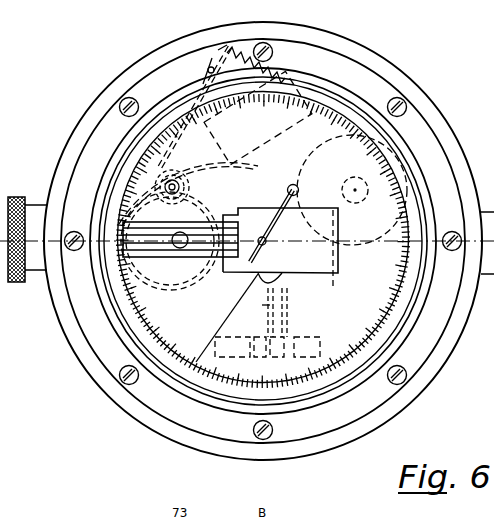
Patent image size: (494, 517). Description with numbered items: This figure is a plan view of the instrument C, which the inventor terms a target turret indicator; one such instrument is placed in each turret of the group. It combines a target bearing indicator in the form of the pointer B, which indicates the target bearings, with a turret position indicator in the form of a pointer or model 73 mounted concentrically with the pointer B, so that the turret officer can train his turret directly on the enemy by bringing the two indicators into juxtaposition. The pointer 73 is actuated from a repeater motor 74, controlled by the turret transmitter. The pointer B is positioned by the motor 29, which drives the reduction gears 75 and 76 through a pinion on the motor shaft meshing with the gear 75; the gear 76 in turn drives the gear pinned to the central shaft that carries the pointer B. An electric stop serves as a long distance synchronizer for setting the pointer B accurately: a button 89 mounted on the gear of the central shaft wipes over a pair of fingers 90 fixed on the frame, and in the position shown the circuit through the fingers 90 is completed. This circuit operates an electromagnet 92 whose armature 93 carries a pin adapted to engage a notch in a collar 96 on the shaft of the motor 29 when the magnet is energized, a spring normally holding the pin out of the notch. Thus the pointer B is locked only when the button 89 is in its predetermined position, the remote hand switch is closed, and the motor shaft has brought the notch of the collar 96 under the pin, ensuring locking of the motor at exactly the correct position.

The target turret indicator instrument C is at (448, 133).
The pointer B is at (260, 305).
The motor 29 is at (217, 174).
The turret position indicator 73 is at (338, 231).
The repeater motor 74 is at (352, 190).
The reduction gear 75 is at (172, 287).
The reduction gear 76 is at (180, 250).
The button 89 is at (267, 281).
The fingers 90 is at (285, 312).
The electromagnet 92 is at (300, 133).
The armature 93 is at (205, 100).
The collar 96 is at (180, 181).